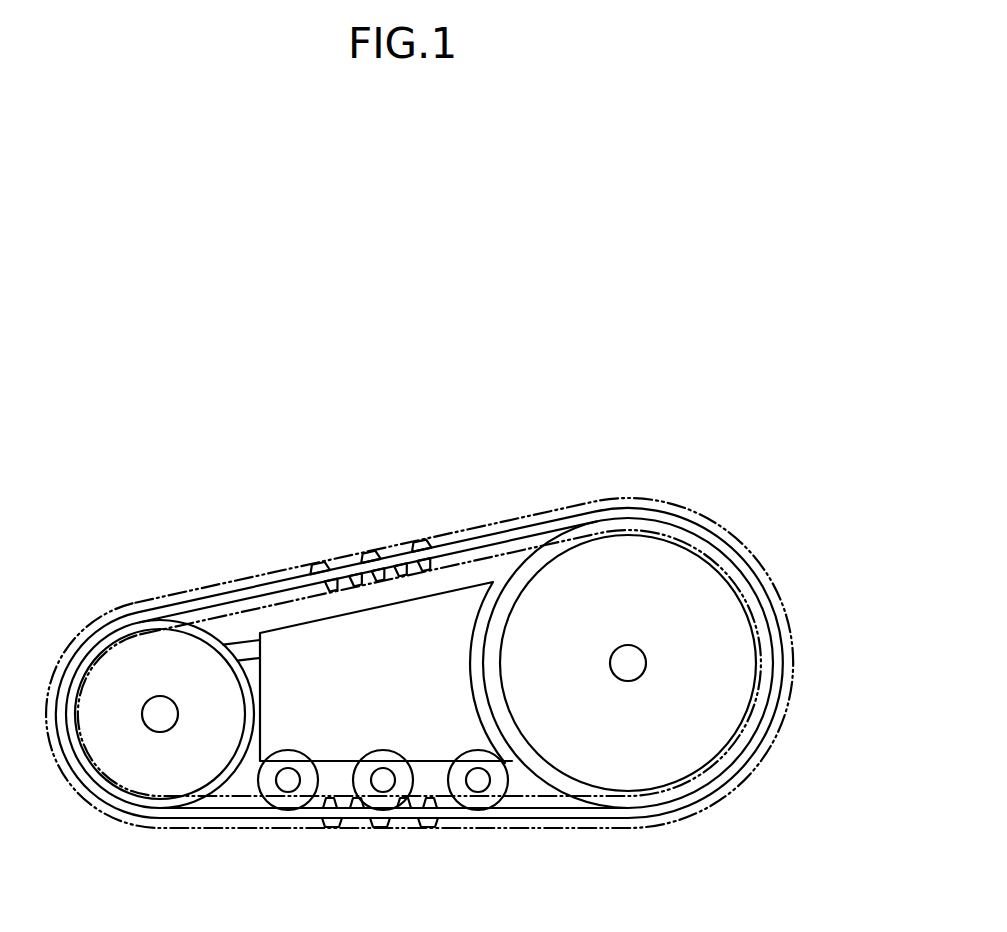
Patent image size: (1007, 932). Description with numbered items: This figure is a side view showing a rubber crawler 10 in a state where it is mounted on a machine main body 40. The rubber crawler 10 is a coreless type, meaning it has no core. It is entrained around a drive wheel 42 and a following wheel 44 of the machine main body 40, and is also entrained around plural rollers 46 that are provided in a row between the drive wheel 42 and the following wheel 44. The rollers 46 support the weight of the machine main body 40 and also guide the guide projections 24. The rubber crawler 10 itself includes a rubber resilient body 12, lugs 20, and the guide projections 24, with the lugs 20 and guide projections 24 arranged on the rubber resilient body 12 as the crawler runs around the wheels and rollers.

The rubber crawler 10 is at (519, 512).
The rubber resilient body 12 is at (462, 545).
The lugs 20 is at (372, 556).
The guide projections 24 is at (322, 588).
The machine main body 40 is at (646, 392).
The drive wheel 42 is at (118, 670).
The following wheel 44 is at (669, 555).
The rollers 46 is at (488, 800).